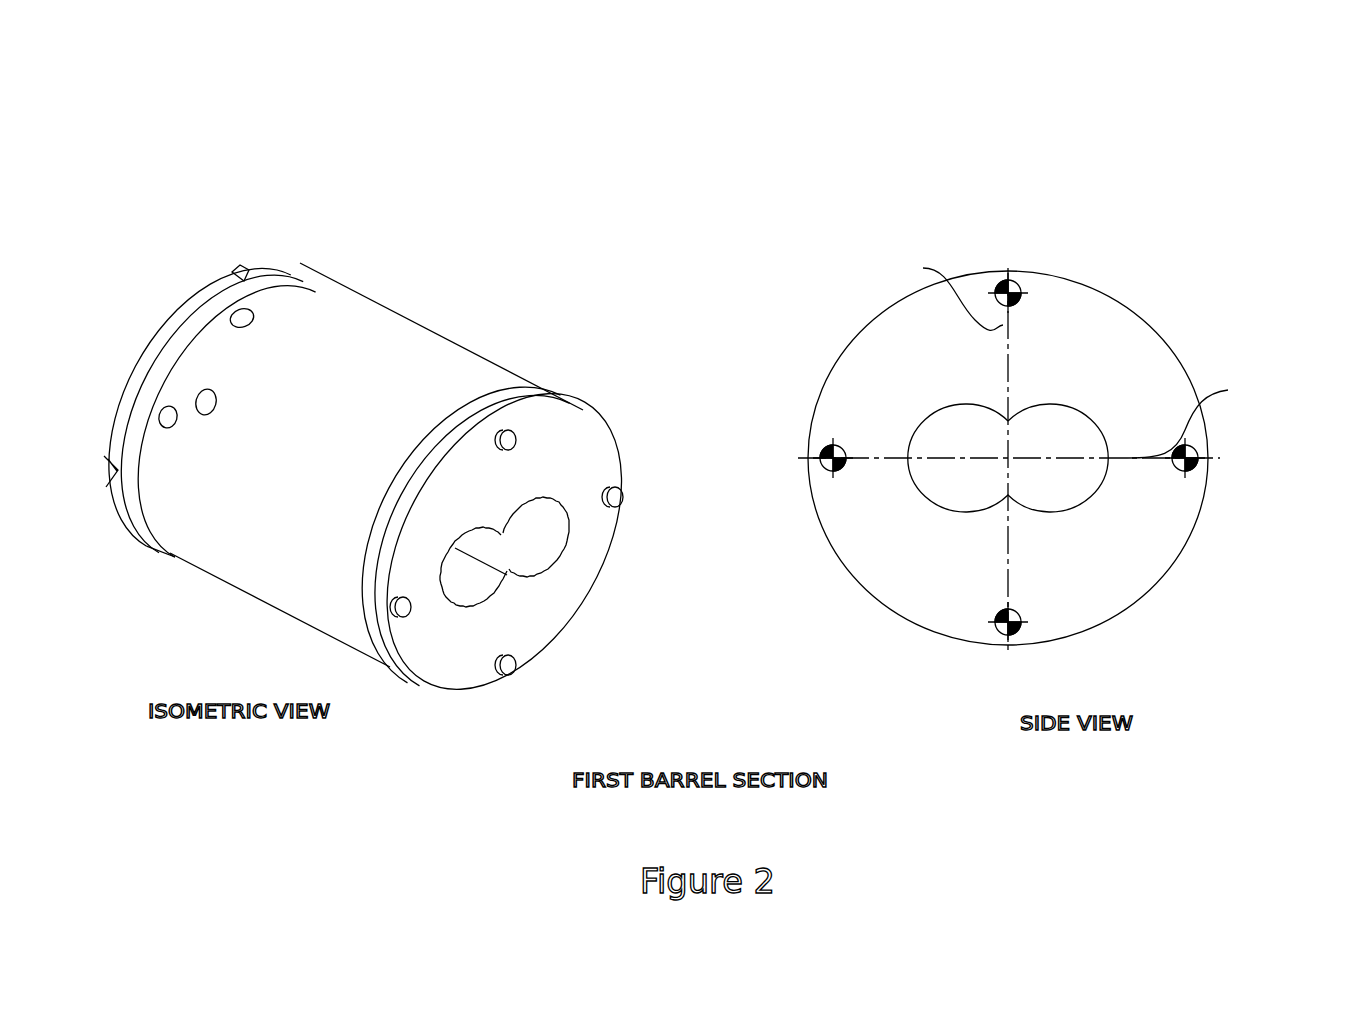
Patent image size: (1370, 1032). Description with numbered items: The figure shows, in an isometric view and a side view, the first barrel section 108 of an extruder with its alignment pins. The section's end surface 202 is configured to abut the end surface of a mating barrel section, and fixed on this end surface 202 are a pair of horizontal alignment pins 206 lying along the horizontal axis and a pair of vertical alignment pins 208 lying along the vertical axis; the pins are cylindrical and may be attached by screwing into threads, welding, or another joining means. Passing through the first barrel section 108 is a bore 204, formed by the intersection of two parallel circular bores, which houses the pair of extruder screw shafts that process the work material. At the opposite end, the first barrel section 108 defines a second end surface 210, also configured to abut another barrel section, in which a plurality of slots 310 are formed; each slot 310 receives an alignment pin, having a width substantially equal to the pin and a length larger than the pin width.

The first barrel section 108 is at (1177, 184).
The end surface 202 is at (460, 670).
The bore 204 is at (457, 580).
The horizontal alignment pins 206 is at (828, 468).
The vertical alignment pins 208 is at (1006, 280).
The second end surface 210 is at (200, 303).
The slots 310 is at (242, 272).